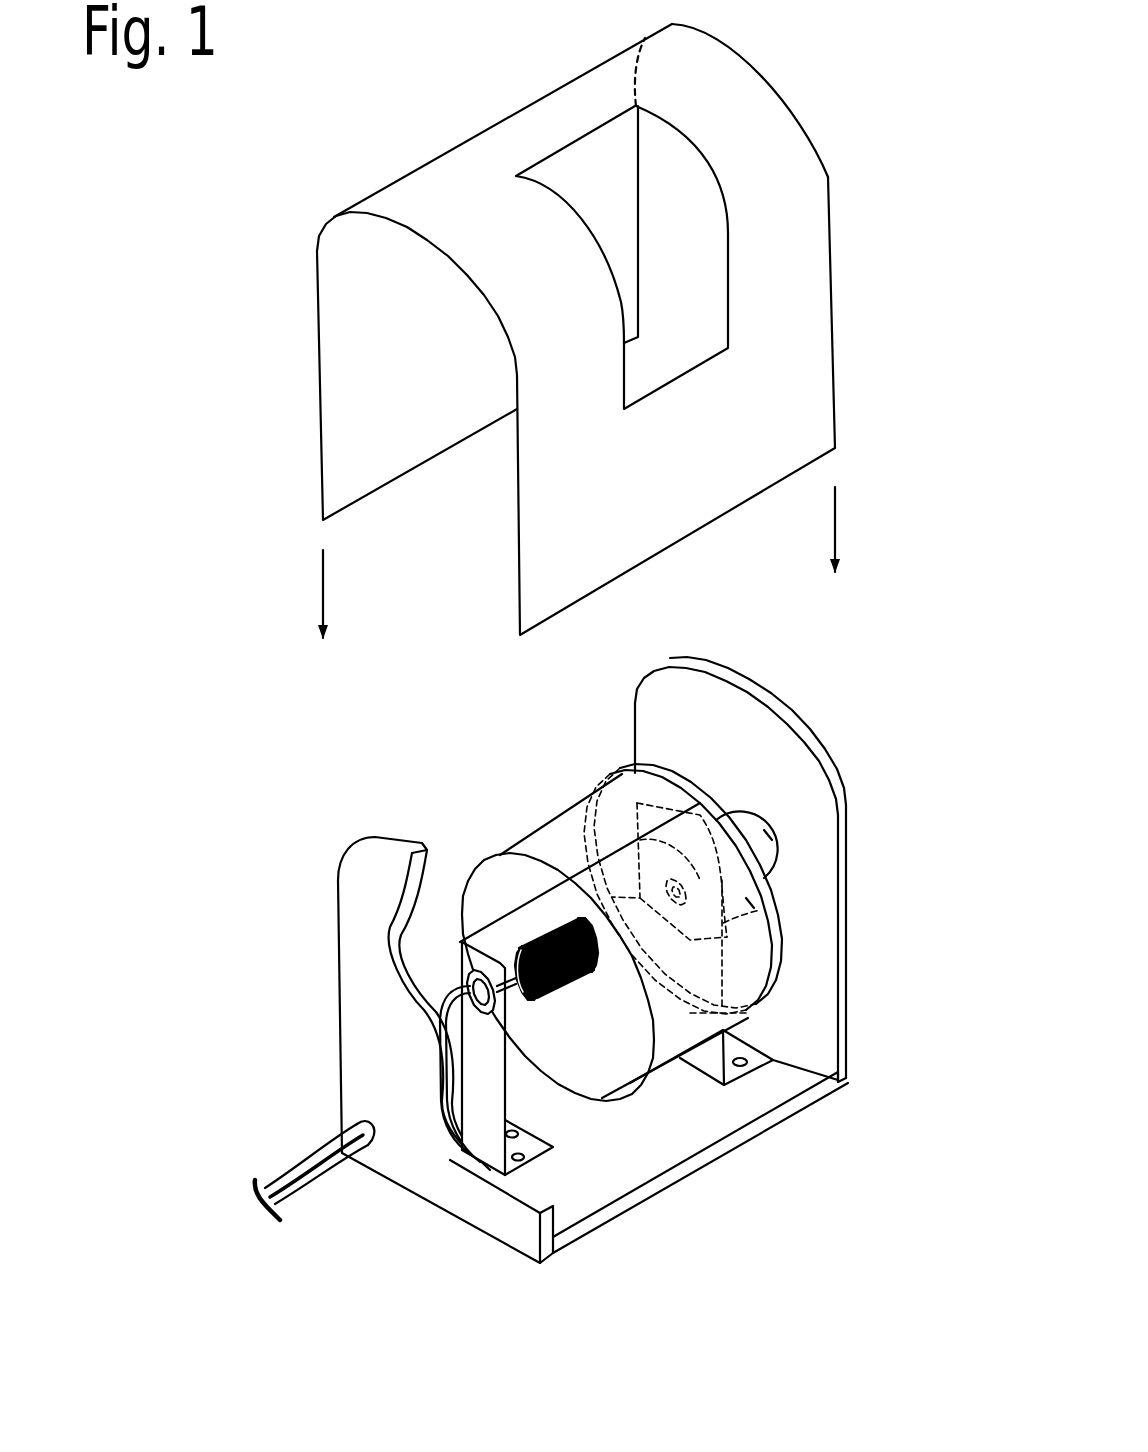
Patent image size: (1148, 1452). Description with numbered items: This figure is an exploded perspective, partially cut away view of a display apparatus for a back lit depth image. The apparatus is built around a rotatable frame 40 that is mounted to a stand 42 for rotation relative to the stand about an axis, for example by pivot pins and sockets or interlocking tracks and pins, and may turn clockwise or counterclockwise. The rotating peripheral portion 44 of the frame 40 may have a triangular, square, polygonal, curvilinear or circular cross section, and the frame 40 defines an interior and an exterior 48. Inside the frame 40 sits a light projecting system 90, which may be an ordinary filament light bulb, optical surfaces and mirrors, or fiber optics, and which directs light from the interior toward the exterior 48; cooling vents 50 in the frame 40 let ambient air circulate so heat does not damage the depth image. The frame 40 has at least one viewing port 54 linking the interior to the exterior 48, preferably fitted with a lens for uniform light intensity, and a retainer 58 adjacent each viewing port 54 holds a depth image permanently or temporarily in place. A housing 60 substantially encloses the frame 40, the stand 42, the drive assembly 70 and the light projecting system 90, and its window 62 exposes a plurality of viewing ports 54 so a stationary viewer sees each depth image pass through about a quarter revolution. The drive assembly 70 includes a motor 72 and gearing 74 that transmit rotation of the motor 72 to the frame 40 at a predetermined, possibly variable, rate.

The rotatable frame 40 is at (790, 932).
The stand 42 is at (708, 663).
The peripheral portion 44 is at (505, 851).
The exterior 48 is at (621, 911).
The cooling vents 50 is at (750, 948).
The viewing port 54 is at (732, 987).
The retainer 58 is at (673, 1028).
The housing 60 is at (632, 331).
The window 62 is at (722, 290).
The drive assembly 70 is at (741, 825).
The motor 72 is at (770, 835).
The gearing 74 is at (750, 903).
The light projecting system 90 is at (574, 993).